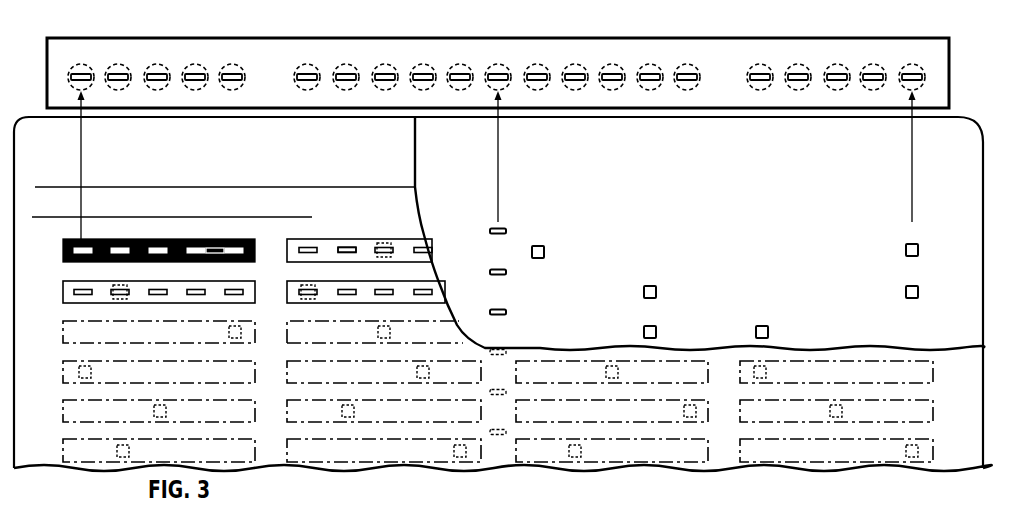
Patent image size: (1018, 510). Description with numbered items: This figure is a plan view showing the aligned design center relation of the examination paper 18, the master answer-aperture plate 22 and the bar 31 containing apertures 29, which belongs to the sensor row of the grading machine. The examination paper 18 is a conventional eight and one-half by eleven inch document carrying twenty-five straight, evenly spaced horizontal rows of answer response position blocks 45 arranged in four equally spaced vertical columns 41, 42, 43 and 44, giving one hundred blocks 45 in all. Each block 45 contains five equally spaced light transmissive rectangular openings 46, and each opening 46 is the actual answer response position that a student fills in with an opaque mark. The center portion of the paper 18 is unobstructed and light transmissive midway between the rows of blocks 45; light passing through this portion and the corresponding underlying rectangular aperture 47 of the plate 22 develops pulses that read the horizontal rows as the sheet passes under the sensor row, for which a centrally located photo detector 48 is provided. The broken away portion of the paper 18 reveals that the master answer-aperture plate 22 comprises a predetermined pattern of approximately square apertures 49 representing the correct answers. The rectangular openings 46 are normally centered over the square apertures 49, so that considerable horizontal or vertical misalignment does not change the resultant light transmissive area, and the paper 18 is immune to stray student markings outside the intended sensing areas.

The examination paper 18 is at (415, 150).
The master answer-aperture plate 22 is at (983, 172).
The apertures 29 is at (344, 66).
The bar 31 is at (949, 57).
The vertical column 41 is at (70, 239).
The vertical column 42 is at (297, 239).
The vertical column 43 is at (655, 455).
The vertical column 44 is at (855, 455).
The answer response position block 45 is at (214, 238).
The light transmissive rectangular opening 46 is at (125, 247).
The rectangular aperture 47 is at (489, 269).
The centrally located photo detector 48 is at (500, 60).
The approximately square aperture 49 is at (544, 250).